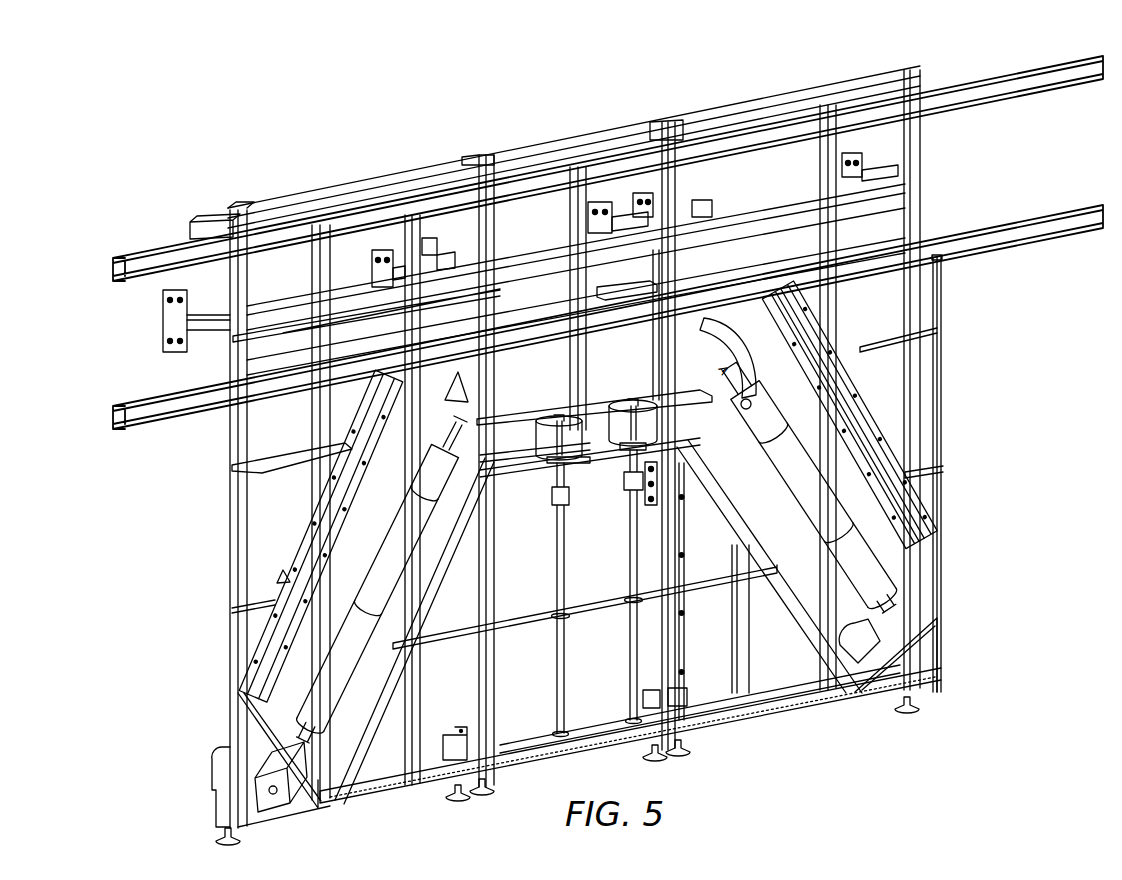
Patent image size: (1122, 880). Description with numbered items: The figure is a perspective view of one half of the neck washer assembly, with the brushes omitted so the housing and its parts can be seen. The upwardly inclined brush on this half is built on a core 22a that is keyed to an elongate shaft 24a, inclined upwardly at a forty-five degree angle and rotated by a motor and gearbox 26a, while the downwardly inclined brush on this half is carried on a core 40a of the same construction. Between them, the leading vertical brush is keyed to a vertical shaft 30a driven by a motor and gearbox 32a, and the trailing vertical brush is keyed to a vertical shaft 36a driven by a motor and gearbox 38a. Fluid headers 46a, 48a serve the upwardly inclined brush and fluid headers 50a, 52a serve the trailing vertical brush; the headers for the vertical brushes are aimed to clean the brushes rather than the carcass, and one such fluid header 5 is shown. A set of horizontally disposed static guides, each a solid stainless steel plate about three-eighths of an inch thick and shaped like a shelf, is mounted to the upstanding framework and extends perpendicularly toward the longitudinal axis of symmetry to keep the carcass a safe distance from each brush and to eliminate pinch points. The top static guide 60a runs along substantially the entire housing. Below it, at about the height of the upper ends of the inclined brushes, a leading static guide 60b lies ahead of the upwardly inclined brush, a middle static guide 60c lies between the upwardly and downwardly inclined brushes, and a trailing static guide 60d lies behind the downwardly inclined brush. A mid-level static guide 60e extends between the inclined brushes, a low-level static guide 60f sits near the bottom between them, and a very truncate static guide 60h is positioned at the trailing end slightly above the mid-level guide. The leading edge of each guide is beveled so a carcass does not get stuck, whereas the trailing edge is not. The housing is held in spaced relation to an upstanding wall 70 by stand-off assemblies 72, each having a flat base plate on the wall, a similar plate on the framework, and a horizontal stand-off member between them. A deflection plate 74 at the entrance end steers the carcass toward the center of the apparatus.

The fluid header 5 is at (686, 533).
The core 22a is at (403, 558).
The elongate shaft 24a is at (445, 442).
The motor and gearbox 26a is at (289, 810).
The vertical shaft 30a is at (556, 557).
The motor and gearbox 32a is at (550, 448).
The vertical shaft 36a is at (628, 527).
The motor and gearbox 38a is at (627, 430).
The core 40a is at (847, 572).
The fluid header 46a is at (373, 400).
The fluid header 48a is at (330, 533).
The fluid header 50a is at (848, 381).
The fluid header 52a is at (880, 465).
The top static guide 60a is at (312, 325).
The leading static guide 60b is at (287, 458).
The middle static guide 60c is at (564, 405).
The trailing static guide 60d is at (898, 334).
The mid-level static guide 60e is at (578, 618).
The low-level static guide 60f is at (380, 783).
The truncate static guide 60h is at (928, 473).
The upstanding wall 70 is at (142, 341).
The stand-off assemblies 72 is at (187, 345).
The deflection plate 74 is at (935, 290).